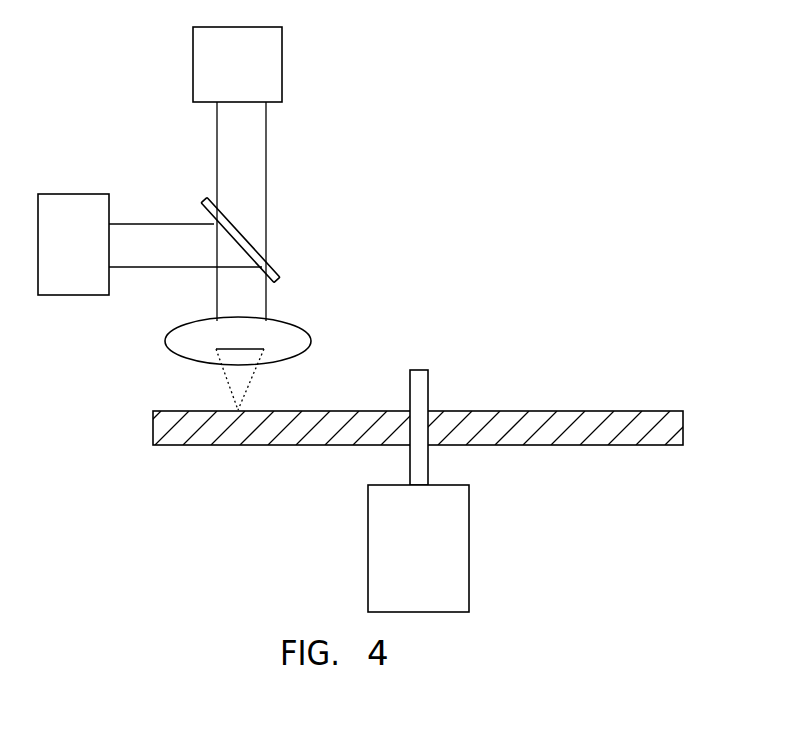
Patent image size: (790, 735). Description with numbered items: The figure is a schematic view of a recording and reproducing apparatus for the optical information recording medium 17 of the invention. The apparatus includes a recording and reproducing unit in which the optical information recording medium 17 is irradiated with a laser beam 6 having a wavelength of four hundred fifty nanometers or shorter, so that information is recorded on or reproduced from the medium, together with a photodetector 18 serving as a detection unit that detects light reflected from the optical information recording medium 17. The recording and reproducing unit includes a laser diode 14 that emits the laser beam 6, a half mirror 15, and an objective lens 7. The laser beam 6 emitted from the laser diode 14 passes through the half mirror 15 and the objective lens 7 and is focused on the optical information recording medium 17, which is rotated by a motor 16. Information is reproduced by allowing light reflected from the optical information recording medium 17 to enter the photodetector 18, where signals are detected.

The laser diode 14 is at (280, 60).
The laser beam 6 is at (266, 177).
The photodetector 18 is at (60, 203).
The half mirror 15 is at (278, 268).
The objective lens 7 is at (168, 349).
The optical information recording medium 17 is at (660, 442).
The motor 16 is at (460, 534).